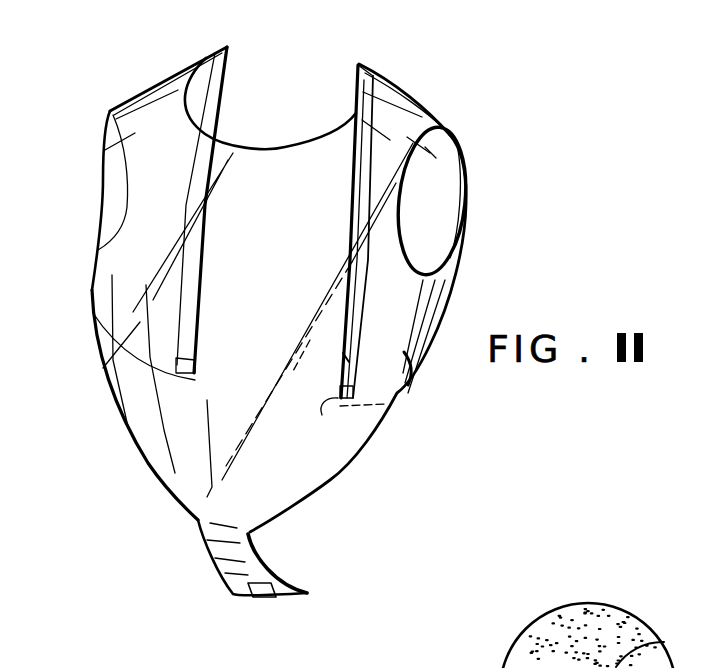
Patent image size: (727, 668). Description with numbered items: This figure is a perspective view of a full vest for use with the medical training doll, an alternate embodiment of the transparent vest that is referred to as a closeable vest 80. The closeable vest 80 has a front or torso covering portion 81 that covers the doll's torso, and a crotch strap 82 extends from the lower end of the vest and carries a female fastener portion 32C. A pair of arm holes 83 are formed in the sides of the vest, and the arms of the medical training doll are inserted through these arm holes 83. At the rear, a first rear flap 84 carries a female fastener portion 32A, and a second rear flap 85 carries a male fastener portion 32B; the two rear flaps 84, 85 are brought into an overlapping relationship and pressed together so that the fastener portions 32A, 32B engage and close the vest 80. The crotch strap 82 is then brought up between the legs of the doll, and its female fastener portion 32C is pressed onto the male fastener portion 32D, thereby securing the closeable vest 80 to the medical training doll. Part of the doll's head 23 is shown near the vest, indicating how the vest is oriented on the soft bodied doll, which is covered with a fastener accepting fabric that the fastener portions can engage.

The closeable vest 80 is at (183, 433).
The front or torso covering portion 81 is at (273, 180).
The crotch strap 82 is at (210, 565).
The arm holes 83 is at (103, 184).
The first rear flap 84 is at (227, 85).
The second rear flap 85 is at (322, 415).
The female fastener portion 32A is at (195, 243).
The male fastener portion 32B is at (357, 213).
The female fastener portion 32C is at (261, 598).
The male fastener portion 32D is at (343, 353).
The head 23 is at (562, 607).